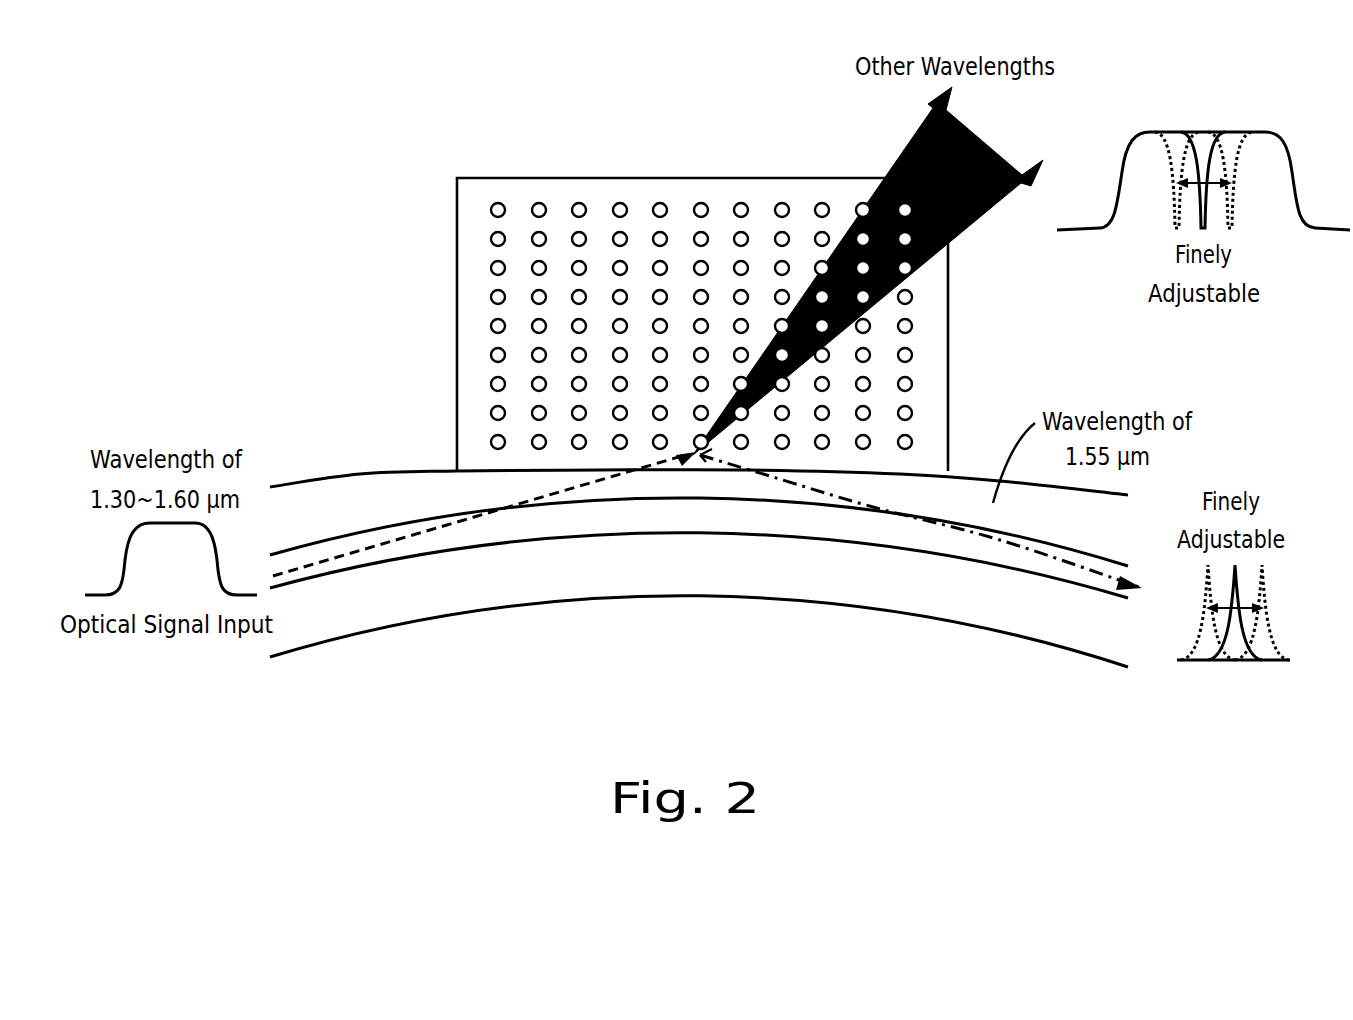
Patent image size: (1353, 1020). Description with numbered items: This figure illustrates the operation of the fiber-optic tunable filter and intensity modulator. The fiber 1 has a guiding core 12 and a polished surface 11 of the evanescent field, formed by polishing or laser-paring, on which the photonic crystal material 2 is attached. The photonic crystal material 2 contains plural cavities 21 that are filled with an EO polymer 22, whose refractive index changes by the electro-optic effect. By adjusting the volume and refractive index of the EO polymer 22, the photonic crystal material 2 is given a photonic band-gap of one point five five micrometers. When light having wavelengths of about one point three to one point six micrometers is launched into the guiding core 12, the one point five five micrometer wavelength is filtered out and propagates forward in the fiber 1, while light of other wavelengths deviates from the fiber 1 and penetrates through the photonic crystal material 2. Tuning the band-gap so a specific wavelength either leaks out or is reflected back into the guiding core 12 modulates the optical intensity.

The fiber 1 is at (380, 628).
The polished surface 11 is at (603, 478).
The guiding core 12 is at (372, 557).
The photonic crystal material 2 is at (457, 231).
The cavities 21 is at (494, 298).
The EO polymer 22 is at (494, 413).